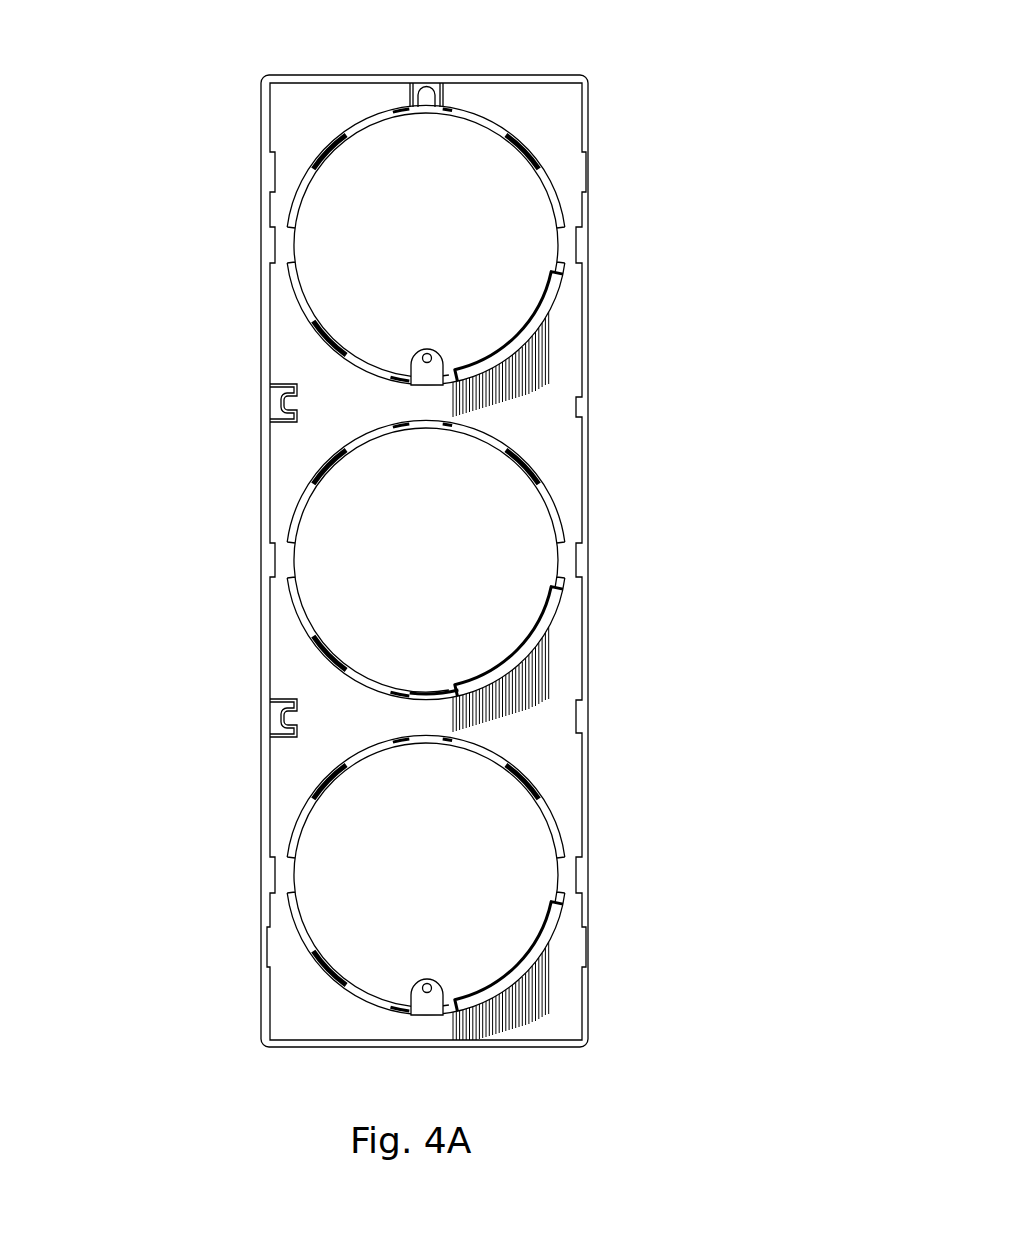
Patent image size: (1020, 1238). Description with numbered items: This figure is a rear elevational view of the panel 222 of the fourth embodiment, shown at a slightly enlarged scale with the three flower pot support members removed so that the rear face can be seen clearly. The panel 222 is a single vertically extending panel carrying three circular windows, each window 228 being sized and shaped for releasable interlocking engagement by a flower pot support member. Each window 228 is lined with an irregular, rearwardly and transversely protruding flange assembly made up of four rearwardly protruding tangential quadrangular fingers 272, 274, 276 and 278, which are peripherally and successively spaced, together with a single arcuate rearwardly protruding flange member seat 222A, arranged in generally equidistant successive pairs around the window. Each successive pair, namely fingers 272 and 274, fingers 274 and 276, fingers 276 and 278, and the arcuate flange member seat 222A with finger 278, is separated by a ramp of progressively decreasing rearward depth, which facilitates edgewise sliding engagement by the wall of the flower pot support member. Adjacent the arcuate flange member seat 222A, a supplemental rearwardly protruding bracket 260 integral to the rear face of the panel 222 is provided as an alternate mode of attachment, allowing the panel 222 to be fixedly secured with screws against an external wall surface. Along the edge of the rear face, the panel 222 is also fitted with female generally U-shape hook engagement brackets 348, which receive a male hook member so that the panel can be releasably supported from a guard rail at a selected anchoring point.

The panel 222 is at (283, 644).
The arcuate flange member seat 222A is at (515, 373).
The window 228 is at (526, 477).
The bracket 260 is at (413, 362).
The finger 272 is at (327, 663).
The finger 274 is at (328, 152).
The finger 276 is at (432, 423).
The finger 278 is at (543, 150).
The female U-shape hook engagement bracket 348 is at (277, 417).